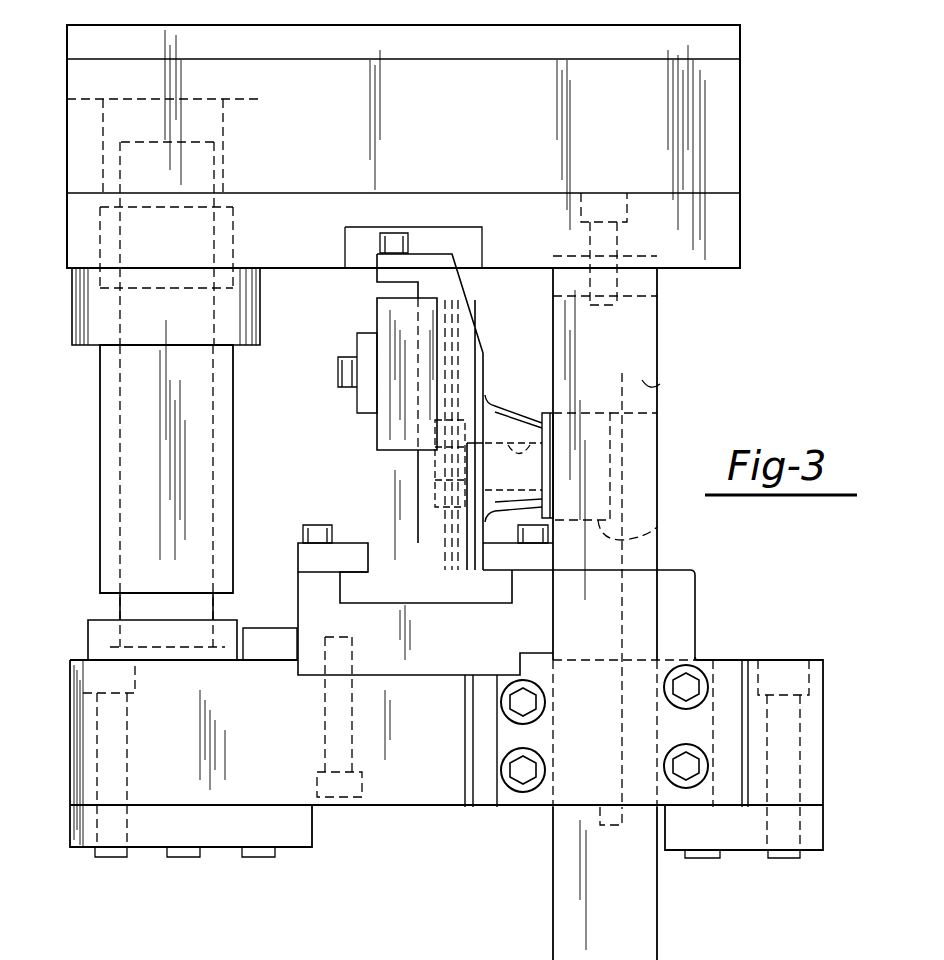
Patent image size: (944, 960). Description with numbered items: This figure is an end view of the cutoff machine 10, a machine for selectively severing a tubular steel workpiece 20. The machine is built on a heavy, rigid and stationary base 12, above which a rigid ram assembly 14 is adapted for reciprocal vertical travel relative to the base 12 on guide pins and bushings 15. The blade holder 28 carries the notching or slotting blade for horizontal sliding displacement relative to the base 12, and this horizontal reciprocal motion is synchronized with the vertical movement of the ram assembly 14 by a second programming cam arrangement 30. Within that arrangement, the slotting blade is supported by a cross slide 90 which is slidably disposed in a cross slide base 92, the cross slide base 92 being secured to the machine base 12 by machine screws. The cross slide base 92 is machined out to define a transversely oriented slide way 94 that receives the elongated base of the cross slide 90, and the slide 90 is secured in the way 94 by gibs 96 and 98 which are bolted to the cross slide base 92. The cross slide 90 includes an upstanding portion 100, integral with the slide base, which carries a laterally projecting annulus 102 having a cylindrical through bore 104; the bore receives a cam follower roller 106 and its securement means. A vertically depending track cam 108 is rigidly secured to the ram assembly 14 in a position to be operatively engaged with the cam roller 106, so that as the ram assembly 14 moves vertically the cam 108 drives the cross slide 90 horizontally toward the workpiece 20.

The cutoff machine 10 is at (677, 360).
The base 12 is at (70, 673).
The ram assembly 14 is at (742, 123).
The guide pins and bushings 15 is at (108, 472).
The tubular steel workpiece 20 is at (254, 957).
The blade holder 28 is at (377, 303).
The programming cam arrangement 30 is at (660, 311).
The cross slide 90 is at (475, 320).
The cross slide base 92 is at (297, 612).
The slide way 94 is at (512, 580).
The gib 96 is at (347, 546).
The gib 98 is at (530, 560).
The upstanding portion 100 is at (417, 492).
The annulus 102 is at (500, 410).
The through bore 104 is at (555, 400).
The cam follower roller 106 is at (660, 538).
The track cam 108 is at (642, 380).